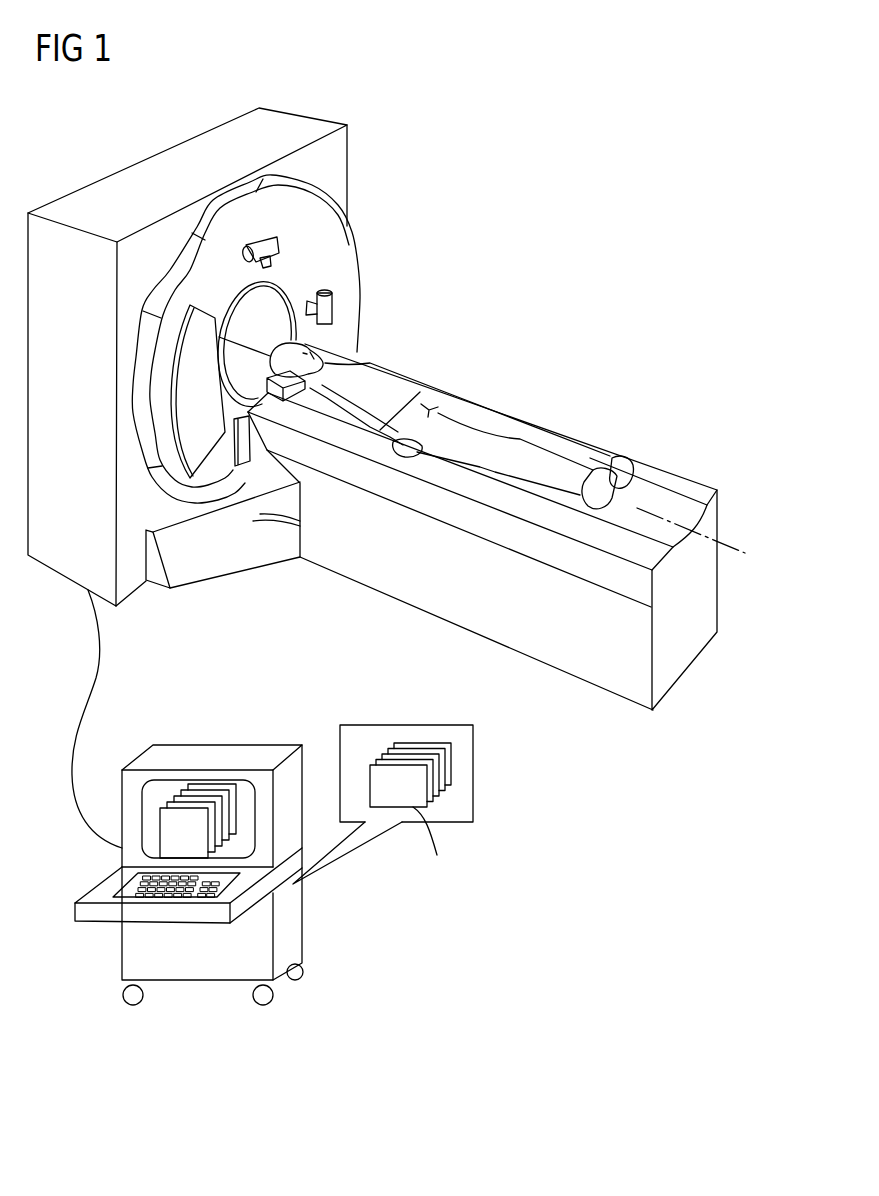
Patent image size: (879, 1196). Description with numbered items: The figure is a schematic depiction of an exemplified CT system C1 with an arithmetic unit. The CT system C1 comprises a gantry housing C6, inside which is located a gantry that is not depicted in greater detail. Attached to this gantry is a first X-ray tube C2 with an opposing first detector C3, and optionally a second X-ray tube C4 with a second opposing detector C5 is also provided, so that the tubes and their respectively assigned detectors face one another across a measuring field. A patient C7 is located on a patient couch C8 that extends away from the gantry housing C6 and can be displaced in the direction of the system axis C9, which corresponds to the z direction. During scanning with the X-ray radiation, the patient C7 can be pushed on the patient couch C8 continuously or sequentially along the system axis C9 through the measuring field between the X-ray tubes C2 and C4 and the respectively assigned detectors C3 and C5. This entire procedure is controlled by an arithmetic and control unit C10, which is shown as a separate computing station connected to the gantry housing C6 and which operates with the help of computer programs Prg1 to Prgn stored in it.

The CT system C1 is at (291, 366).
The first X-ray tube C2 is at (279, 242).
The first detector C3 is at (250, 451).
The second X-ray tube C4 is at (333, 302).
The second detector C5 is at (196, 440).
The gantry housing C6 is at (52, 546).
The patient C7 is at (381, 380).
The patient couch C8 is at (612, 688).
The system axis C9 is at (737, 547).
The arithmetic and control unit C10 is at (293, 924).